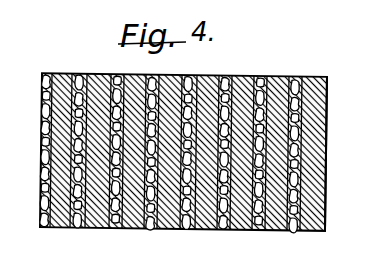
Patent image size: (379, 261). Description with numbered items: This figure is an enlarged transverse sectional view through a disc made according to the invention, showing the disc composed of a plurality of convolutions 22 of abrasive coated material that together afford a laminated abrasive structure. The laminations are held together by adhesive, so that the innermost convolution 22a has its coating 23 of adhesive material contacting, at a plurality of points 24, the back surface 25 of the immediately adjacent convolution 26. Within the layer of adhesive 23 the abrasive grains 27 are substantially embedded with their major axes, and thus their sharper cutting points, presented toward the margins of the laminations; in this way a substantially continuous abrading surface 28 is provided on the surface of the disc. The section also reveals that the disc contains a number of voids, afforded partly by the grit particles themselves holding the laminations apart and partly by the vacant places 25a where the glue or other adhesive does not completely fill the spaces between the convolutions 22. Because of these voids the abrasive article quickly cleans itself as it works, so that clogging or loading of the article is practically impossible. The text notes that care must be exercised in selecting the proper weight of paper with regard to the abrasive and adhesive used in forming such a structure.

The convolutions 22 is at (83, 219).
The innermost convolution 22a is at (315, 141).
The coating of adhesive material 23 is at (255, 74).
The contact points 24 is at (293, 168).
The back surface 25 is at (223, 82).
The vacant places 25a is at (322, 180).
The adjacent convolution 26 is at (272, 72).
The abrasive grains 27 is at (288, 80).
The abrading surface 28 is at (107, 220).